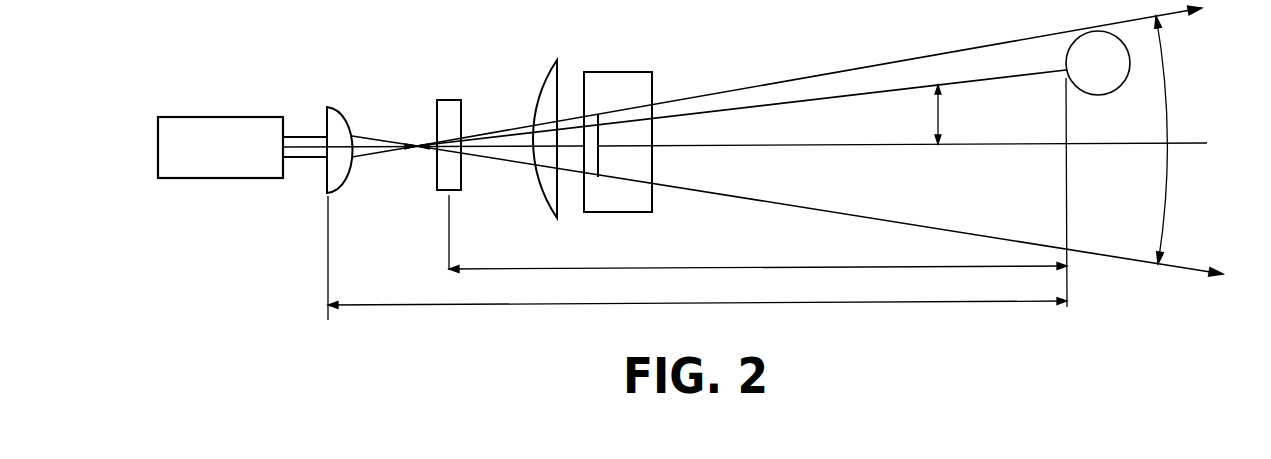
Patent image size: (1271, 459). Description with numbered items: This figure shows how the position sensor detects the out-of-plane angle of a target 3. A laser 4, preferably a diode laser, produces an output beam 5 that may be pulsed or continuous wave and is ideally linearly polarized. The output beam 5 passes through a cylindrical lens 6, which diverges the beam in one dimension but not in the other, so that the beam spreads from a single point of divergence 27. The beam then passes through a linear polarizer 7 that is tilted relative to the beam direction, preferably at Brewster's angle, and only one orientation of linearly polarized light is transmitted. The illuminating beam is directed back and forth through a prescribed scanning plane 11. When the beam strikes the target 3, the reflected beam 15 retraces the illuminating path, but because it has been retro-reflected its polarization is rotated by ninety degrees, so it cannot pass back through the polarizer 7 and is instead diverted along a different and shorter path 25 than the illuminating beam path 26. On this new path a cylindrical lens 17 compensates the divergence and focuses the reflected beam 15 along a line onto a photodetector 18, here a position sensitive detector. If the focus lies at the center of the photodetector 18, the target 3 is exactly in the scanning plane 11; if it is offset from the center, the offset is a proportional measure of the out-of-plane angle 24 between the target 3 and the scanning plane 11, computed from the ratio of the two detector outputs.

The target 3 is at (1107, 77).
The laser 4 is at (200, 117).
The output beam 5 is at (303, 158).
The cylindrical lens 6 is at (343, 108).
The linear polarizer 7 is at (630, 72).
The scanning plane 11 is at (1190, 140).
The reflected beam 15 is at (997, 80).
The cylindrical lens 17 is at (545, 86).
The photodetector 18 is at (440, 100).
The out-of-plane angle 24 is at (936, 115).
The reflected beam path 25 is at (752, 266).
The illuminating beam path 26 is at (840, 305).
The point of divergence 27 is at (415, 149).